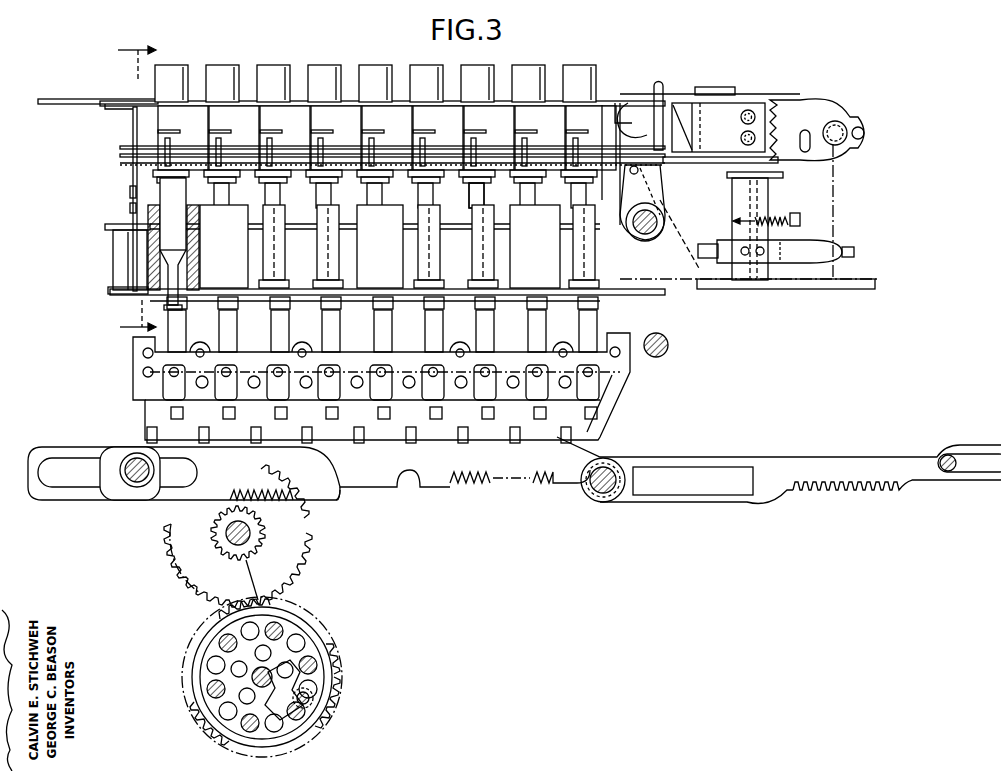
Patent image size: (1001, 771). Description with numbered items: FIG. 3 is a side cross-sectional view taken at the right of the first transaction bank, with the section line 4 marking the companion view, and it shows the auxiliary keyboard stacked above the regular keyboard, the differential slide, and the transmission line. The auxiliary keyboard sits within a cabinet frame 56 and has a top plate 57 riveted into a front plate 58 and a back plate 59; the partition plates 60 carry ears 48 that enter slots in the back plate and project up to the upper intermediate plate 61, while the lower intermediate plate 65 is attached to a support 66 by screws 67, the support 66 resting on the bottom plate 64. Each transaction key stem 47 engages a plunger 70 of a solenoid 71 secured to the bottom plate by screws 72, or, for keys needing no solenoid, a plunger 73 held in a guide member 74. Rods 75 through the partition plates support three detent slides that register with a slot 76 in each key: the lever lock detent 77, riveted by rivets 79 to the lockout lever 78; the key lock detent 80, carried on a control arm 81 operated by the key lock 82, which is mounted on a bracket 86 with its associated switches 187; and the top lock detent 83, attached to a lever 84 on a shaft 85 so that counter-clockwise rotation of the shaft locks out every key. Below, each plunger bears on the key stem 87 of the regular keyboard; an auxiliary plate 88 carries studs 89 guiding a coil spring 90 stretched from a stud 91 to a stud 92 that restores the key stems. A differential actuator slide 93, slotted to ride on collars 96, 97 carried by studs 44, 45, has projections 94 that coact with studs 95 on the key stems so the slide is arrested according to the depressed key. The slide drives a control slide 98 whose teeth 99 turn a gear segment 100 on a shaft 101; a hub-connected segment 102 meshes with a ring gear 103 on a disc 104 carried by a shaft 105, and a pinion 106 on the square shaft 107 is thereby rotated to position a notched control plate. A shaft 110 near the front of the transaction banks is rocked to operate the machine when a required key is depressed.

The section line 4- 4 is at (126, 189).
The stud 44 is at (600, 495).
The stud 45 is at (124, 472).
The key stem 47 is at (305, 100).
The ears 48 is at (130, 192).
The cabinet frame 56 is at (72, 100).
The top plate 57 is at (145, 120).
The front plate 58 is at (618, 104).
The back plate 59 is at (130, 208).
The partition plates 60 is at (507, 133).
The upper intermediate plate 61 is at (403, 123).
The bottom plate 64 is at (110, 290).
The lower intermediate plate 65 is at (115, 232).
The support 66 is at (115, 262).
The screws 67 is at (107, 226).
The plunger 70 is at (185, 233).
The solenoid 71 is at (195, 270).
The screws 72 is at (600, 296).
The plunger 73 is at (484, 190).
The guide member 74 is at (498, 250).
The rods 75 is at (200, 140).
The slot 76 is at (232, 140).
The lever lock detent 77 is at (122, 147).
The lockout lever 78 is at (657, 80).
The rivets 79 is at (618, 120).
The key lock detent 80 is at (122, 156).
The control arm 81 is at (688, 165).
The key lock 82 is at (715, 88).
The top lock detent 83 is at (135, 165).
The lever 84 is at (665, 200).
The shaft 85 is at (645, 235).
The bracket 86 is at (818, 105).
The key stem 87 is at (598, 325).
The auxiliary plate 88 is at (615, 395).
The studs 89 is at (566, 390).
The coil spring 90 is at (163, 385).
The stud 91 is at (142, 370).
The stud 92 is at (622, 360).
The differential actuator slide 93 is at (55, 498).
The projections 94 is at (147, 435).
The studs 95 is at (171, 413).
The collar 96 is at (615, 498).
The collar 97 is at (142, 490).
The control slide 98 is at (408, 488).
The teeth 99 is at (338, 502).
The gear segment 100 is at (262, 530).
The shaft 101 is at (252, 540).
The segment 102 is at (200, 565).
The ring gear 103 is at (262, 605).
The disc 104 is at (282, 735).
The shaft 105 is at (272, 672).
The pinion 106 is at (300, 684).
The square shaft 107 is at (312, 702).
The shaft 110 is at (669, 345).
The switches 187 is at (836, 242).